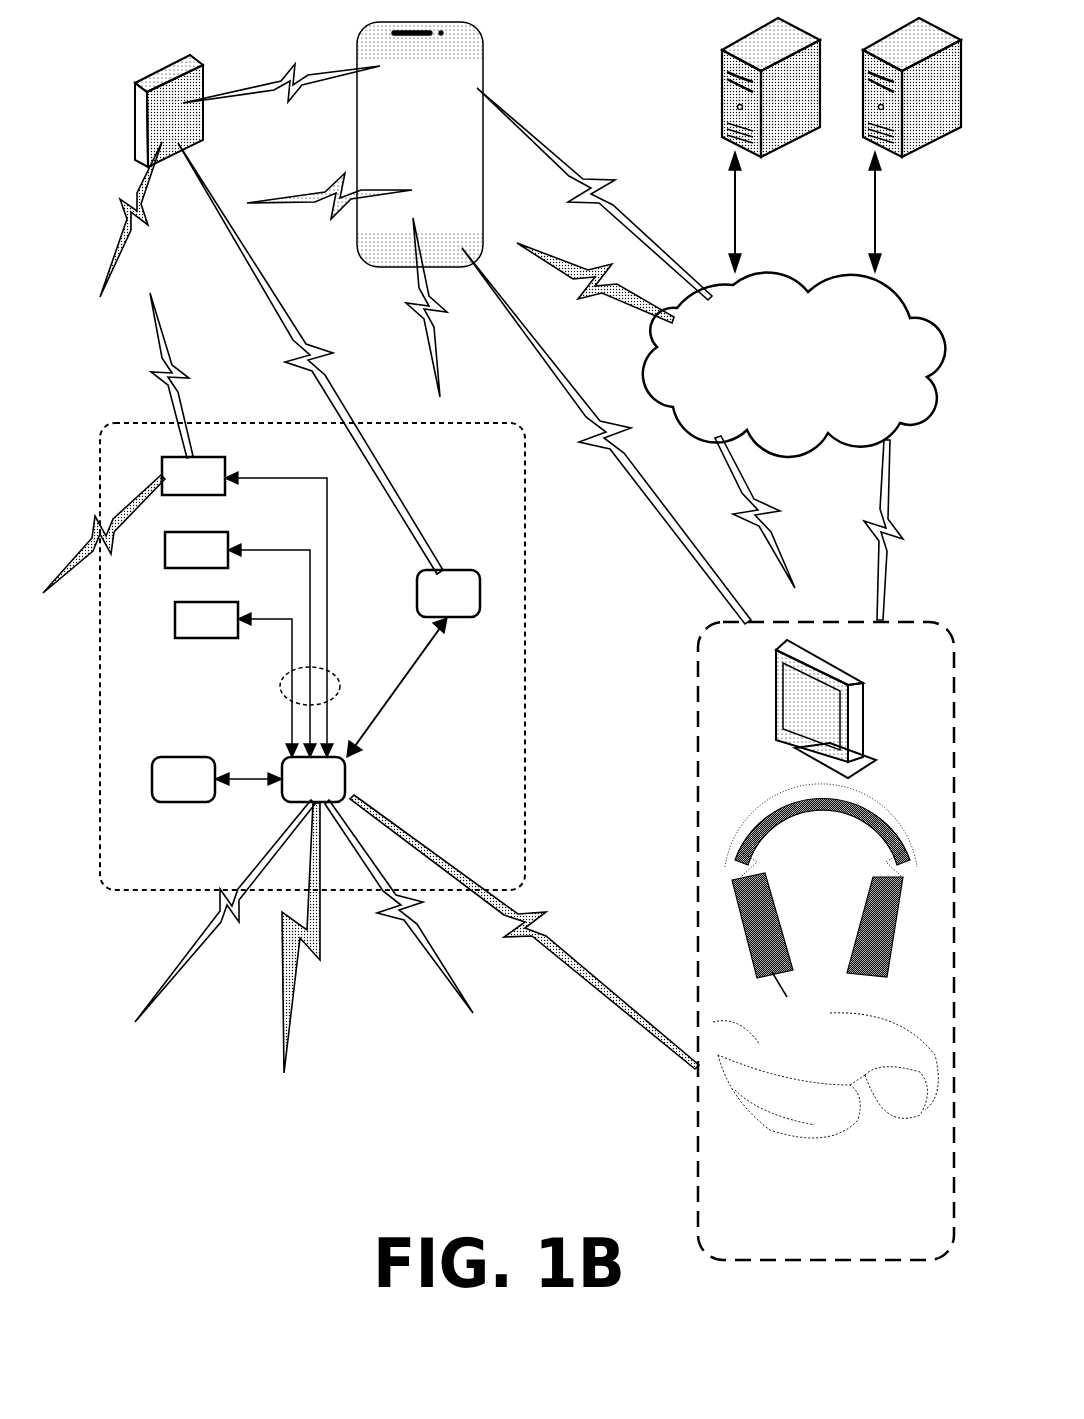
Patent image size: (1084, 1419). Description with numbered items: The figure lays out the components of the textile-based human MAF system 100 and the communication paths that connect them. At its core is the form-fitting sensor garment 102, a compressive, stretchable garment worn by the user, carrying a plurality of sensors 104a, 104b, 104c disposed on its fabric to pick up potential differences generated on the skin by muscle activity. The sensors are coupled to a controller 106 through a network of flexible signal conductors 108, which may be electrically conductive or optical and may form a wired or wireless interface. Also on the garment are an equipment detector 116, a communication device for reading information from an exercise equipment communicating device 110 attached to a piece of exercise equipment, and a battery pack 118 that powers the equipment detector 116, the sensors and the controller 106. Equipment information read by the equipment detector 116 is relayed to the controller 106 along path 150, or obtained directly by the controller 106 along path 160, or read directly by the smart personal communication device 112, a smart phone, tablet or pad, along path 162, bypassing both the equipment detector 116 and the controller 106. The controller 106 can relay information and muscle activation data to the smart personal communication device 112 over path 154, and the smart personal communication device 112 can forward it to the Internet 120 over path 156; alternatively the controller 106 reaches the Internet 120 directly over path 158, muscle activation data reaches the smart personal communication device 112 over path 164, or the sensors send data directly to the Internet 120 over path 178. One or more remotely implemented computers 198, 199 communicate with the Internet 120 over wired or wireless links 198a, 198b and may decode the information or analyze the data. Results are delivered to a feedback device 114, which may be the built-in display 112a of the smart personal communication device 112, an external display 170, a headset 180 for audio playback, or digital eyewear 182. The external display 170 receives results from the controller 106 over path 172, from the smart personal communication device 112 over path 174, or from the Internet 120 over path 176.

The textile-based human MAF system 100 is at (193, 1087).
The form-fitting sensor garment 102 is at (483, 500).
The sensor 104a is at (214, 487).
The sensor 104b is at (218, 559).
The sensor 104c is at (228, 629).
The controller 106 is at (329, 788).
The network of flexible signal conductors 108 is at (282, 686).
The exercise equipment communicating device 110 is at (151, 125).
The smart personal communication device 112 is at (462, 37).
The built-in display 112a is at (437, 158).
The feedback device 114 is at (918, 1235).
The equipment detector 116 is at (464, 602).
The battery pack 118 is at (199, 788).
The Internet 120 is at (820, 364).
The path 150 is at (310, 357).
The path 154 is at (430, 312).
The path 156 is at (600, 190).
The path 158 is at (757, 520).
The path 160 is at (130, 232).
The path 162 is at (280, 82).
The path 164 is at (330, 192).
The external display 170 is at (807, 710).
The path 172 is at (523, 927).
The path 174 is at (598, 443).
The path 176 is at (897, 547).
The path 178 is at (93, 528).
The headset 180 is at (823, 807).
The digital eyewear 182 is at (865, 1093).
The computer 198 is at (778, 120).
The communication link 198a is at (733, 217).
The communication link 198b is at (873, 217).
The computer 199 is at (918, 116).